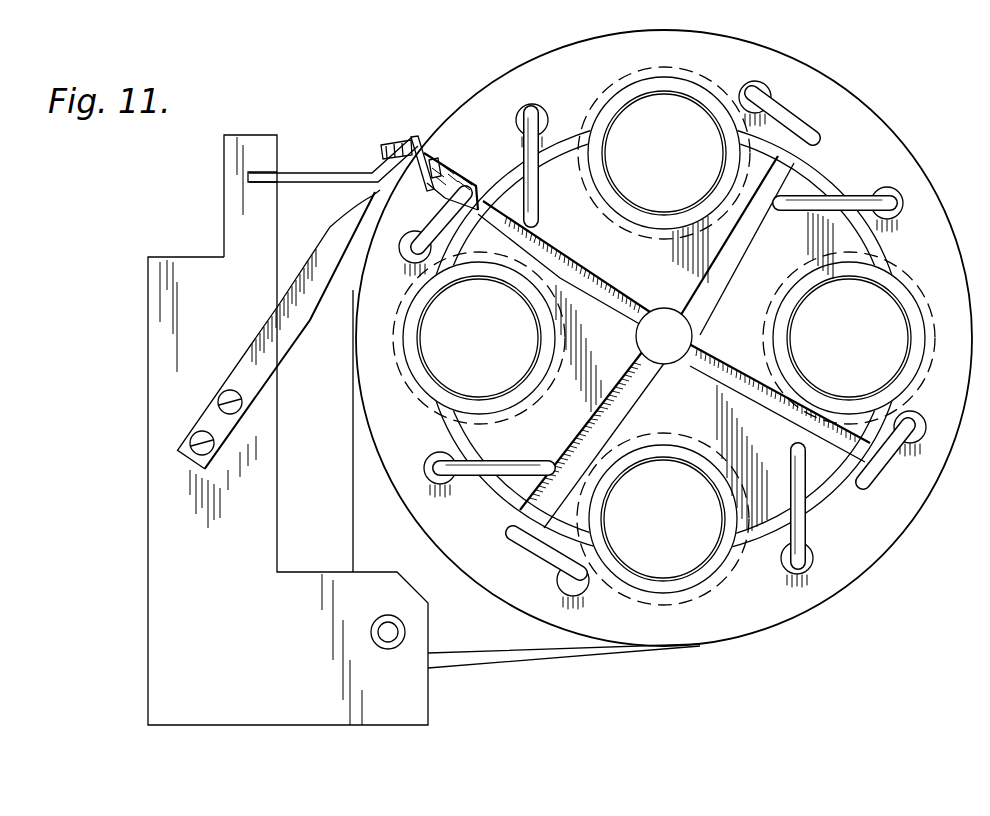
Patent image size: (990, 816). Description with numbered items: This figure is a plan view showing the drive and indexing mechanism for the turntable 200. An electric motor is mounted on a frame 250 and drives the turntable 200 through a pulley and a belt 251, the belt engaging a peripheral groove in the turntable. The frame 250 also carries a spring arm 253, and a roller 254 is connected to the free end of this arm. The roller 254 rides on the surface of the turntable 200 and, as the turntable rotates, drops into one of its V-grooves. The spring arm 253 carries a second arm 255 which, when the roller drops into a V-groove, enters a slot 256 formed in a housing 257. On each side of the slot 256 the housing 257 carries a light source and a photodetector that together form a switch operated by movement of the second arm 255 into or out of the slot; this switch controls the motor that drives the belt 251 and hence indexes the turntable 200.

The turntable 200 is at (795, 630).
The frame 250 is at (412, 708).
The belt 251 is at (529, 652).
The spring arm 253 is at (216, 403).
The roller 254 is at (424, 158).
The second arm 255 is at (337, 173).
The slot 256 is at (254, 167).
The housing 257 is at (247, 142).